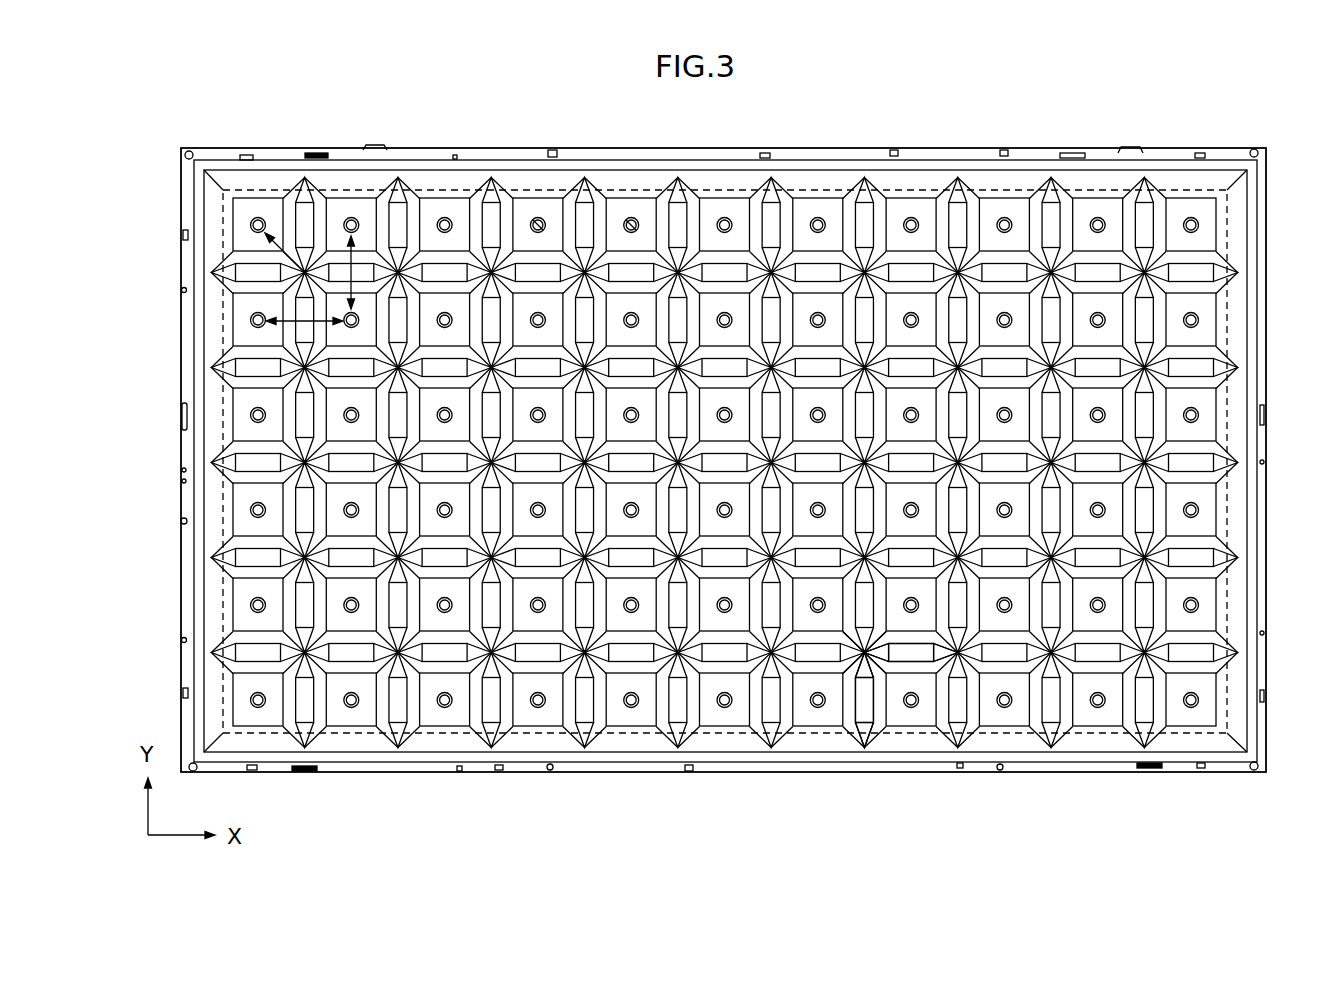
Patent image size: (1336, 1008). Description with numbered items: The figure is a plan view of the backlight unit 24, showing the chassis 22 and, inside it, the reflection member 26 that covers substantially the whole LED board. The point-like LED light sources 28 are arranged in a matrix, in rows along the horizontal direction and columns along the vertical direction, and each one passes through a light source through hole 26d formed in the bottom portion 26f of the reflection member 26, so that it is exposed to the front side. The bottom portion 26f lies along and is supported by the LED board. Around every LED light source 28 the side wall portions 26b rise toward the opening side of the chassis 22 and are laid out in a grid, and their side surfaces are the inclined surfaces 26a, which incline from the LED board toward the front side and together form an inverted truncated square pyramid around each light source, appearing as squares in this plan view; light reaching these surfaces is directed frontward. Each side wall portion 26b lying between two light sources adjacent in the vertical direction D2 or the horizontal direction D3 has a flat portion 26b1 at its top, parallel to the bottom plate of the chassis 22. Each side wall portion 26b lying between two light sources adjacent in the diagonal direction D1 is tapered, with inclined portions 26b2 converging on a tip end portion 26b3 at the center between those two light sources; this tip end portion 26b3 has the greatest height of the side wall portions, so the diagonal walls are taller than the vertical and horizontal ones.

The chassis 22 is at (1267, 662).
The backlight unit 24 is at (650, 812).
The reflection member 26 is at (1257, 584).
The inclined surfaces 26a is at (260, 481).
The side wall portions 26b is at (1002, 835).
The flat portion 26b1 is at (916, 652).
The inclined portions 26b2 is at (883, 655).
The tip end portion 26b3 is at (865, 655).
The light source through holes 26d is at (623, 218).
The bottom portion 26f is at (548, 716).
The LED light sources 28 is at (447, 613).
The diagonal direction D1 is at (288, 252).
The vertical direction D2 is at (351, 275).
The horizontal direction D3 is at (297, 321).